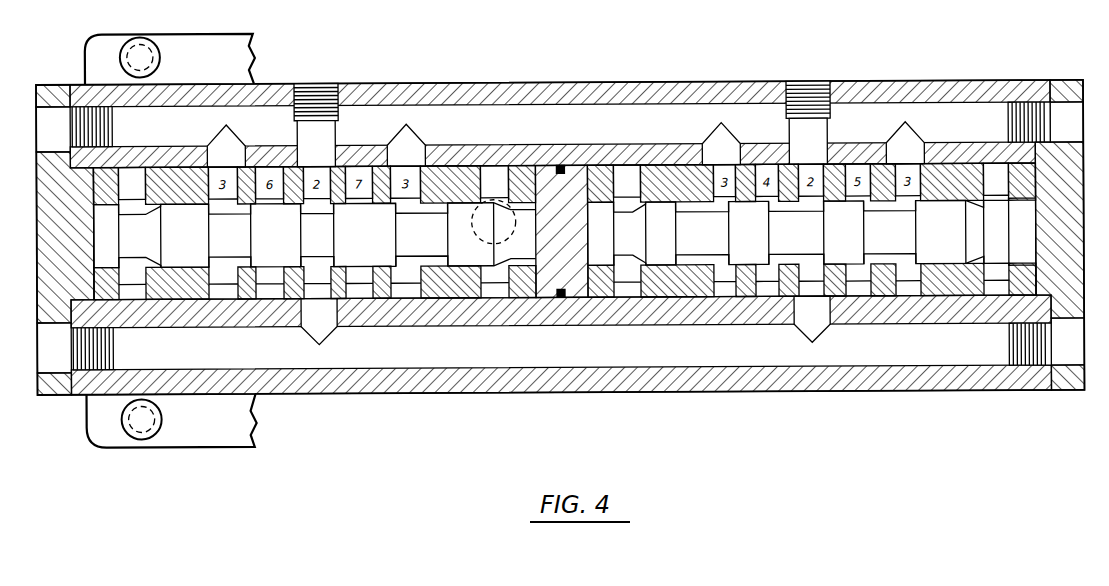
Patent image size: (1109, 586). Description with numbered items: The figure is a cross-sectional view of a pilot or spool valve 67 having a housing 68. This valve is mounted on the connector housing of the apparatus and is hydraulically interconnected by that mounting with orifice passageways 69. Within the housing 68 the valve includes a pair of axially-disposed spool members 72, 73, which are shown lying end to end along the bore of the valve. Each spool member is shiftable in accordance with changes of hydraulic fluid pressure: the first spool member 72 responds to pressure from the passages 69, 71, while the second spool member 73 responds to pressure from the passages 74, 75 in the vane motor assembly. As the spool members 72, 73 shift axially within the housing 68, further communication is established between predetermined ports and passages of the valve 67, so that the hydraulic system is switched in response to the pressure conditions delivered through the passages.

The pilot valve 67 is at (598, 82).
The housing 68 is at (784, 396).
The orifice passageways 69 is at (132, 168).
The passage 71 is at (496, 168).
The spool member 72 is at (326, 230).
The spool member 73 is at (800, 235).
The passage 74 is at (632, 185).
The passage 75 is at (988, 168).